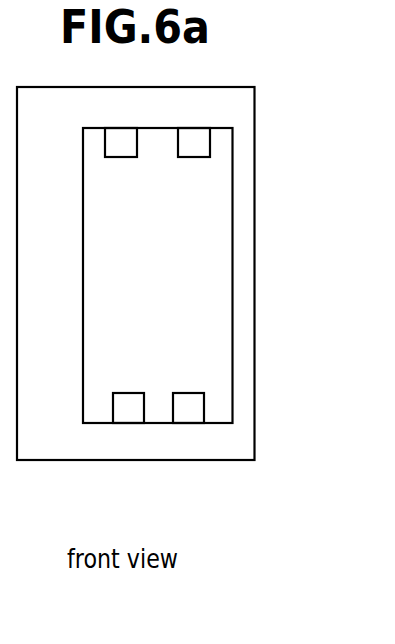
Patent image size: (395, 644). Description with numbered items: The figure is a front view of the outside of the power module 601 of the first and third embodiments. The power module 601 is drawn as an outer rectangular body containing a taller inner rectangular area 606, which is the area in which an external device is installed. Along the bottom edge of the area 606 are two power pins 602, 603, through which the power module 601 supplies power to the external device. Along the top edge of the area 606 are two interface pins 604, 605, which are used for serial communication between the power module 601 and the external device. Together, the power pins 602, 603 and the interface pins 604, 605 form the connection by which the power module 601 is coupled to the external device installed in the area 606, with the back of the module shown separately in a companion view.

The power module 601 is at (255, 190).
The power pin 602 is at (125, 424).
The power pin 603 is at (185, 424).
The interface pin 604 is at (115, 158).
The interface pin 605 is at (190, 158).
The area 606 is at (233, 285).